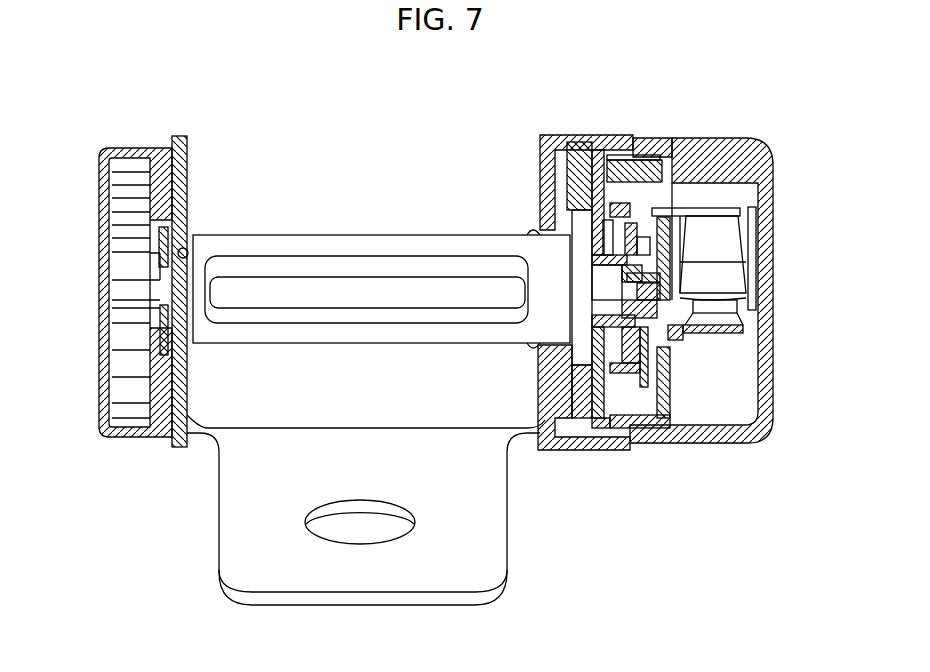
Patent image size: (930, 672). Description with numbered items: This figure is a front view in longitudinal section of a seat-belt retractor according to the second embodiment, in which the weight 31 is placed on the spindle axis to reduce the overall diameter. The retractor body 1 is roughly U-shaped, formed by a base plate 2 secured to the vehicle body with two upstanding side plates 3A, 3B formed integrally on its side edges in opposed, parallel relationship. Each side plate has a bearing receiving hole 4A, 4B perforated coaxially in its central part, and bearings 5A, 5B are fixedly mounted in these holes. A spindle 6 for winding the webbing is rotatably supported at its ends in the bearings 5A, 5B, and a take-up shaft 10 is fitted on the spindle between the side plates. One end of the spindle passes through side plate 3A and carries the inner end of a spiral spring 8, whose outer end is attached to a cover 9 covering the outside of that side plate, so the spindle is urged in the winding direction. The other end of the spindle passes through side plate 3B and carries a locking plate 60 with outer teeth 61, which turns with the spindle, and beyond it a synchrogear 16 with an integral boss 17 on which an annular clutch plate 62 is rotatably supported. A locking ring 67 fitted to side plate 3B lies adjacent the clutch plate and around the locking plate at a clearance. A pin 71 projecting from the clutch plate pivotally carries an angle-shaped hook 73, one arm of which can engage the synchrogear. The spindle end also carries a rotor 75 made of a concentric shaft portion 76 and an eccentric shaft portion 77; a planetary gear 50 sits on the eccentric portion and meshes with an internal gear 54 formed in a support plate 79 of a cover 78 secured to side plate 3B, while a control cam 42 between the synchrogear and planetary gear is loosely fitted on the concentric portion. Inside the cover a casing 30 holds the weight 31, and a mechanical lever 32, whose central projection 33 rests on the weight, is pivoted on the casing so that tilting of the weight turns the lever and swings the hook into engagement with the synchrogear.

The retractor body 1 is at (488, 533).
The base plate 2 is at (242, 505).
The side plate 3A is at (182, 177).
The side plate 3B is at (540, 160).
The bearing receiving hole 4A is at (188, 243).
The bearing receiving hole 4B is at (533, 235).
The bearing 5A is at (178, 253).
The bearing 5B is at (533, 345).
The spindle 6 is at (178, 300).
The spiral spring 8 is at (130, 247).
The cover 9 is at (100, 205).
The take-up shaft 10 is at (360, 237).
The synchrogear 16 is at (627, 428).
The boss 17 is at (592, 265).
The casing 30 is at (752, 280).
The weight 31 is at (743, 233).
The mechanical lever 32 is at (717, 210).
The central projection 33 is at (773, 180).
The control cam 42 is at (647, 428).
The planetary gear 50 is at (665, 345).
The internal gear 54 is at (672, 340).
The locking plate 60 is at (572, 318).
The outer teeth 61 is at (545, 406).
The clutch plate 62 is at (610, 428).
The locking ring 67 is at (577, 420).
The pin 71 is at (633, 167).
The hook 73 is at (653, 160).
The rotor 75 is at (750, 307).
The concentric shaft portion 76 is at (683, 263).
The eccentric shaft portion 77 is at (668, 337).
The cover 78 is at (733, 433).
The support plate 79 is at (687, 433).